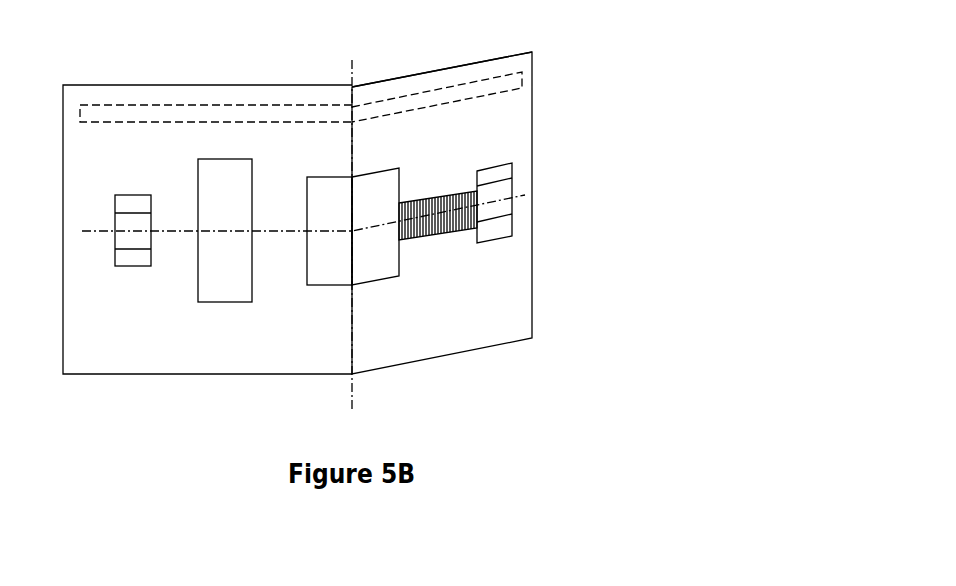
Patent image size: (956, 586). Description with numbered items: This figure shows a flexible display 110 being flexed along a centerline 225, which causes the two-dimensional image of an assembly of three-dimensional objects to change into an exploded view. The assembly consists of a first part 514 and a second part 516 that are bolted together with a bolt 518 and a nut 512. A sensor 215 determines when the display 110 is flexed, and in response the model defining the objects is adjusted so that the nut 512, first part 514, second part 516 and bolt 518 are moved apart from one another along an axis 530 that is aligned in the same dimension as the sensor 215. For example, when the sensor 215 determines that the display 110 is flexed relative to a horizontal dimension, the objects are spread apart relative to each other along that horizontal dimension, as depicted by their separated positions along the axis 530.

The flexible display 110 is at (755, 25).
The sensor 215 is at (165, 123).
The centerline 225 is at (352, 62).
The nut 512 is at (148, 266).
The first part 514 is at (225, 302).
The second part 516 is at (325, 285).
The bolt 518 is at (440, 235).
The axis 530 is at (82, 232).